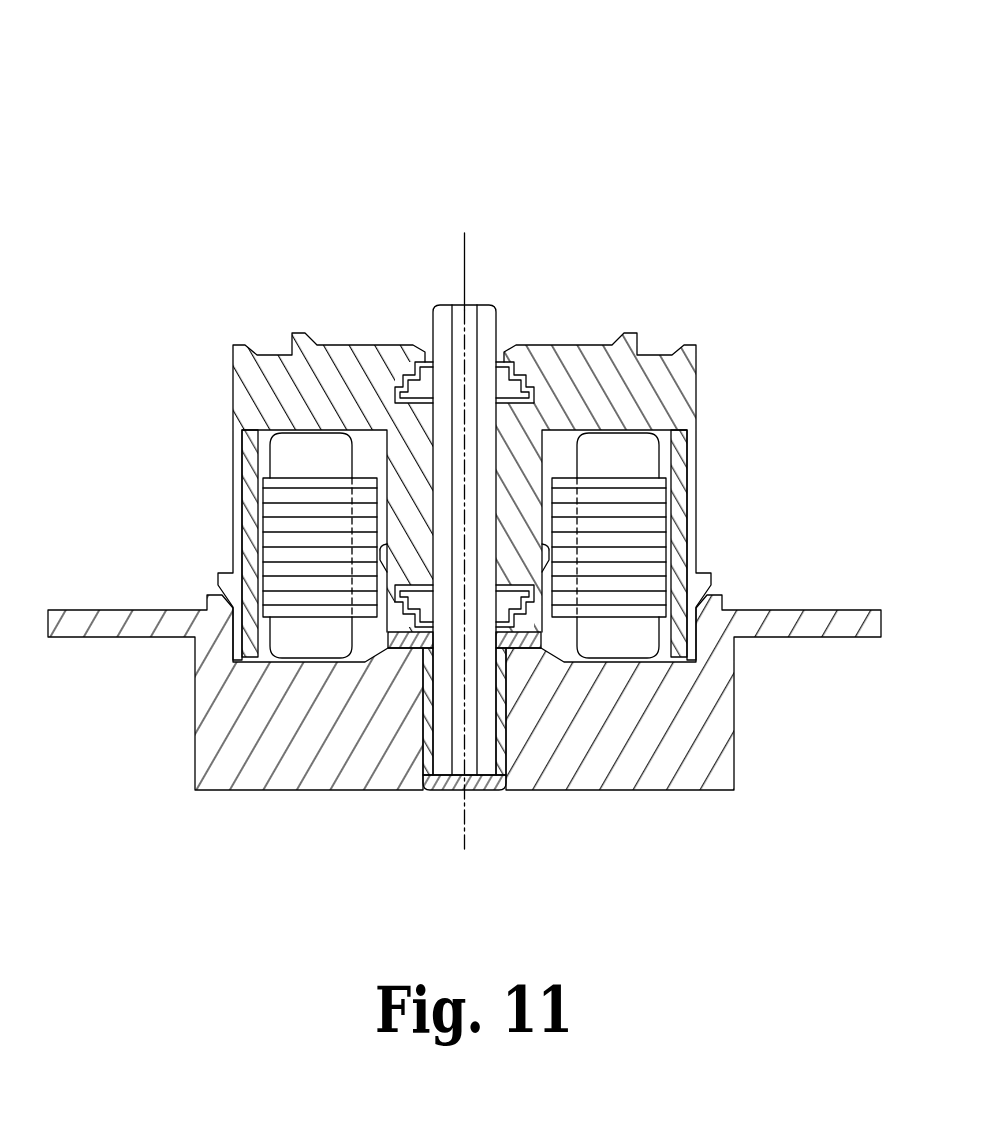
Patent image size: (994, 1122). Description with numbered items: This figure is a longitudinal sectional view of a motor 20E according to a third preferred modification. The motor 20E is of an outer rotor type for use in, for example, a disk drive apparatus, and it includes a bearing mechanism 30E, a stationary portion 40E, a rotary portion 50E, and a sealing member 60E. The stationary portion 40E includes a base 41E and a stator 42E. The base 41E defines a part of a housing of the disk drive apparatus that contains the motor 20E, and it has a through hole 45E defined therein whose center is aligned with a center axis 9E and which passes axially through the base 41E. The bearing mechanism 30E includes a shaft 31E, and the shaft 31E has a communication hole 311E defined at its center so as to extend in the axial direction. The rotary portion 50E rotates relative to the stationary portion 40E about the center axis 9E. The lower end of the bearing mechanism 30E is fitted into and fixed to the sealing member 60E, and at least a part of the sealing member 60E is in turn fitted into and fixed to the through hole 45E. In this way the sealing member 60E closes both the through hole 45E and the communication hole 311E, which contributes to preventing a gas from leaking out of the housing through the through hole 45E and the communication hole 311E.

The motor 20E is at (562, 102).
The center axis 9E is at (463, 257).
The bearing mechanism 30E is at (442, 300).
The shaft 31E is at (484, 318).
The communication hole 311E is at (465, 637).
The through hole 45E is at (485, 637).
The rotary portion 50E is at (277, 355).
The stator 42E is at (640, 462).
The stationary portion 40E is at (257, 792).
The base 41E is at (703, 767).
The sealing member 60E is at (462, 778).